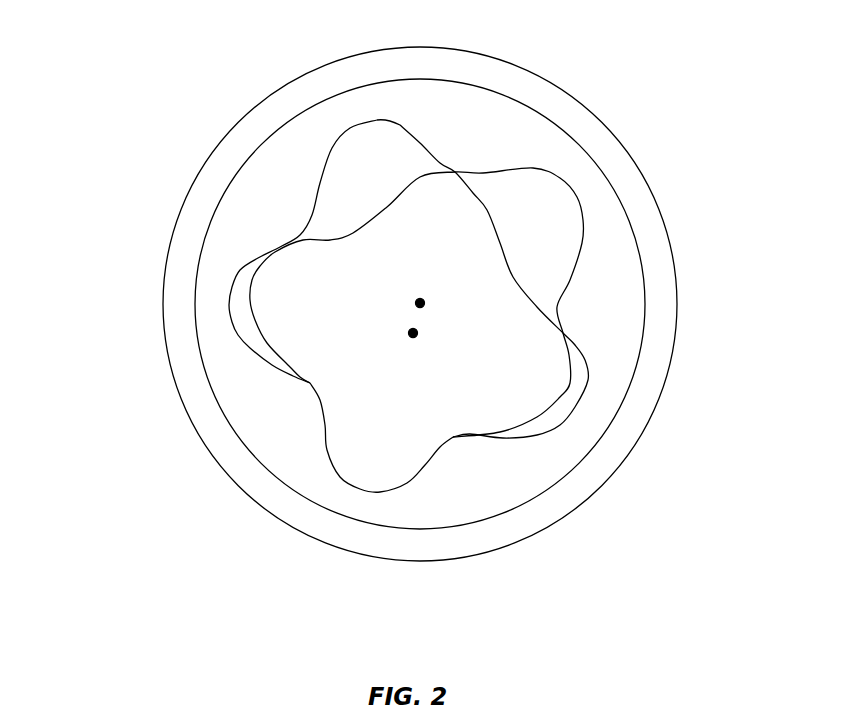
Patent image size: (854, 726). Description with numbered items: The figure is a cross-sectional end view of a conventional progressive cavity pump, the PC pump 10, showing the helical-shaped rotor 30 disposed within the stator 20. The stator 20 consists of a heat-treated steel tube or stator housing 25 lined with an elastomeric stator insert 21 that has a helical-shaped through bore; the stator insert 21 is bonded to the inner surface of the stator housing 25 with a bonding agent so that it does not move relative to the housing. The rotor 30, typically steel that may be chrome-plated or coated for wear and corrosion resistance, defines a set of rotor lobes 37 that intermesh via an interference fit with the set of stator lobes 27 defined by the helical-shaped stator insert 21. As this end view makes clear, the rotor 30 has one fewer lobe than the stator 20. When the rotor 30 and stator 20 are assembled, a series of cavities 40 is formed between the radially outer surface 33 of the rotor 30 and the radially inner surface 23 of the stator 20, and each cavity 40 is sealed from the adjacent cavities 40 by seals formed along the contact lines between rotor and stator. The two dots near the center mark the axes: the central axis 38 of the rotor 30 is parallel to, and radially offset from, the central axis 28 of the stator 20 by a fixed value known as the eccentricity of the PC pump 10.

The PC pump 10 is at (162, 66).
The stator 20 is at (422, 46).
The stator insert 21 is at (258, 432).
The radially inner surface 23 is at (240, 350).
The stator housing 25 is at (565, 502).
The stator lobes 27 is at (237, 270).
The central axis of the stator 28 is at (425, 305).
The rotor 30 is at (443, 403).
The radially outer surface 33 is at (238, 302).
The rotor lobes 37 is at (450, 190).
The central axis of the rotor 38 is at (417, 336).
The cavities 40 is at (563, 207).